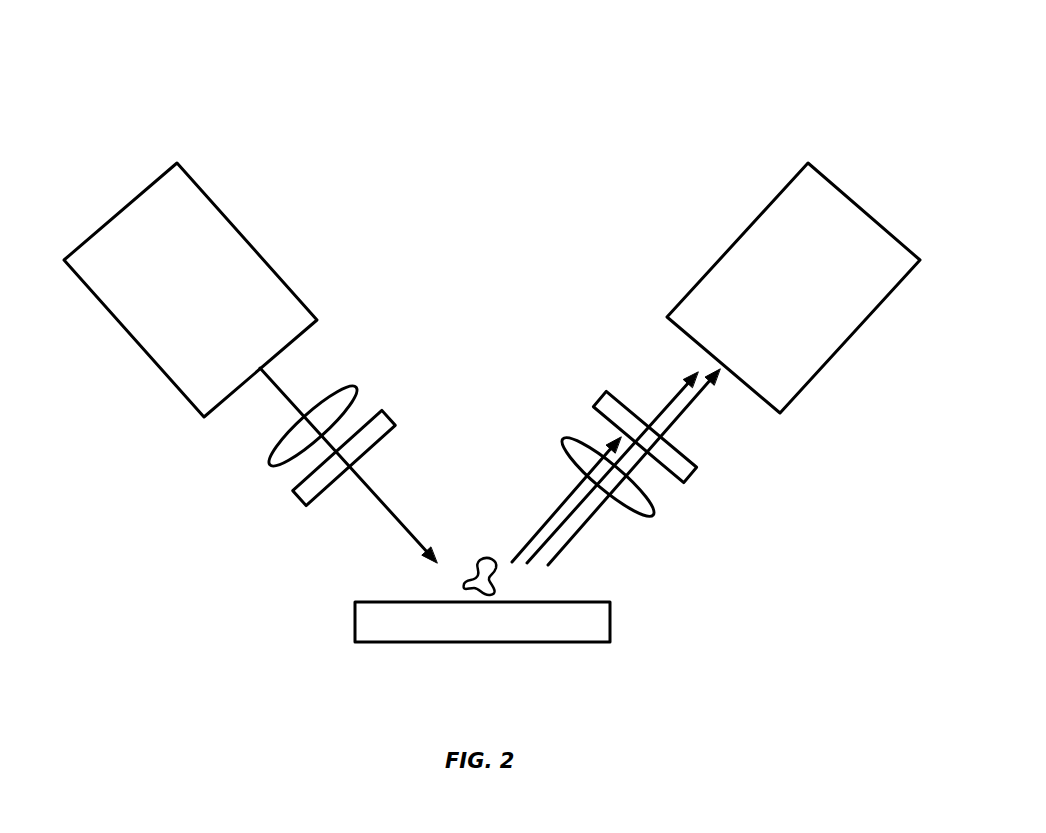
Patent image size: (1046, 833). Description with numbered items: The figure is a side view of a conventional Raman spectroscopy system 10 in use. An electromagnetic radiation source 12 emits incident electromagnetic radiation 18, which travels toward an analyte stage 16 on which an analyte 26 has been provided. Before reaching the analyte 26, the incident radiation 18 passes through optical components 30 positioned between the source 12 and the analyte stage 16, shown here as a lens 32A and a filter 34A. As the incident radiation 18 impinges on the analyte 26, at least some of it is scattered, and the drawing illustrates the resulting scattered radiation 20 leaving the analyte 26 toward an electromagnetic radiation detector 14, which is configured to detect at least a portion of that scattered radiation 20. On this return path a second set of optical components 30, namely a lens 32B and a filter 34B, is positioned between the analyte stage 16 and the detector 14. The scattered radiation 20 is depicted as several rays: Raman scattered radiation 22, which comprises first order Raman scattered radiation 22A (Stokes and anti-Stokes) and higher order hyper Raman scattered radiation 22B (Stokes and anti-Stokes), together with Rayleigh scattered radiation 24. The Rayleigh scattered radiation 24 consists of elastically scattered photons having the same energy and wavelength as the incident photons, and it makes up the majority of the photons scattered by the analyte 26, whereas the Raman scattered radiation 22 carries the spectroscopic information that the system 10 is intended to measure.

The Raman spectroscopy system 10 is at (362, 125).
The electromagnetic radiation source 12 is at (233, 255).
The electromagnetic radiation detector 14 is at (757, 248).
The analyte stage 16 is at (370, 623).
The incident electromagnetic radiation 18 is at (287, 395).
The scattered radiation 20 is at (673, 502).
The Raman scattered radiation 22 is at (651, 480).
The 1st order Raman scattered radiation 22A is at (552, 540).
The higher order hyper Raman scattered radiation 22B is at (578, 512).
The Rayleigh scattered radiation 24 is at (512, 563).
The analyte 26 is at (490, 558).
The optical components 30 is at (500, 451).
The lens 32A is at (287, 447).
The lens 32B is at (638, 505).
The filter 34A is at (308, 505).
The filter 34B is at (677, 462).